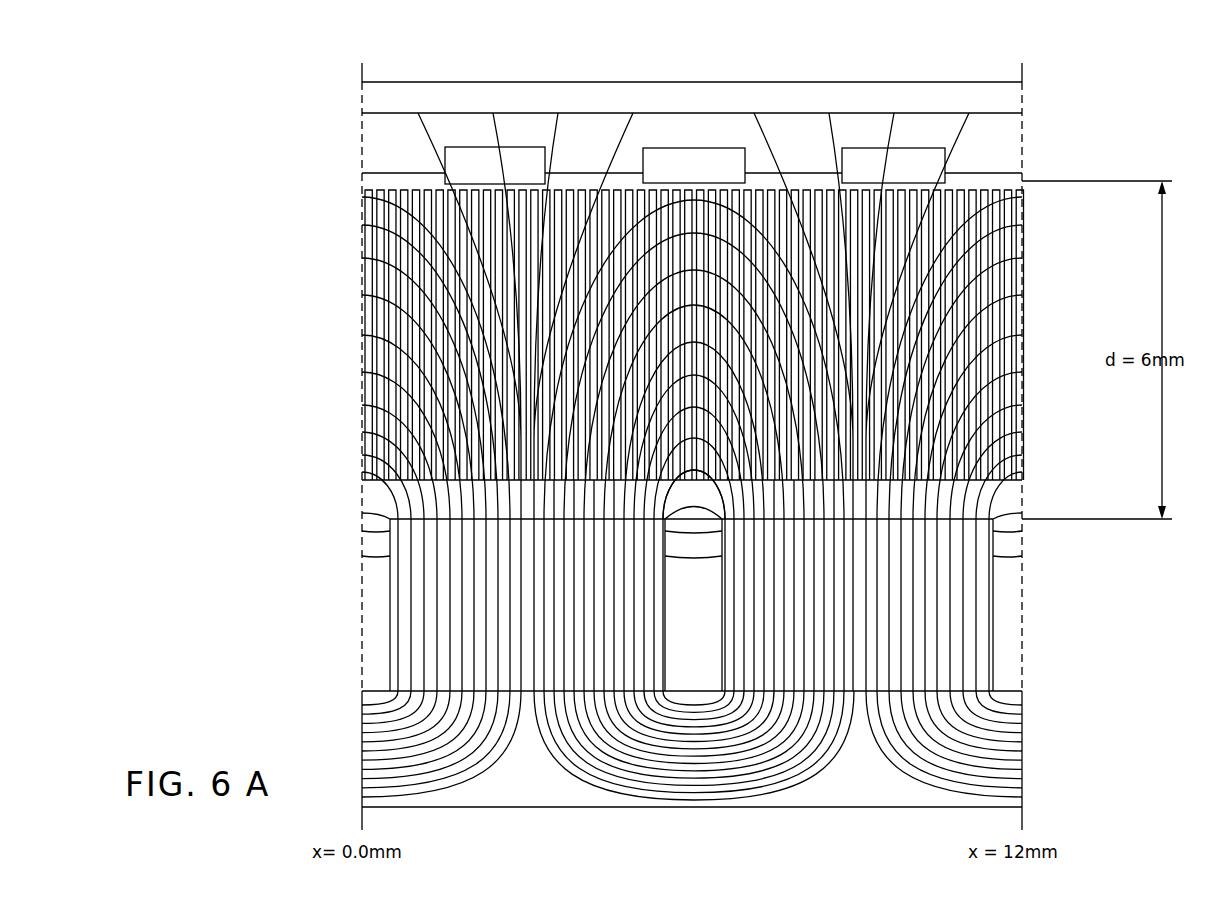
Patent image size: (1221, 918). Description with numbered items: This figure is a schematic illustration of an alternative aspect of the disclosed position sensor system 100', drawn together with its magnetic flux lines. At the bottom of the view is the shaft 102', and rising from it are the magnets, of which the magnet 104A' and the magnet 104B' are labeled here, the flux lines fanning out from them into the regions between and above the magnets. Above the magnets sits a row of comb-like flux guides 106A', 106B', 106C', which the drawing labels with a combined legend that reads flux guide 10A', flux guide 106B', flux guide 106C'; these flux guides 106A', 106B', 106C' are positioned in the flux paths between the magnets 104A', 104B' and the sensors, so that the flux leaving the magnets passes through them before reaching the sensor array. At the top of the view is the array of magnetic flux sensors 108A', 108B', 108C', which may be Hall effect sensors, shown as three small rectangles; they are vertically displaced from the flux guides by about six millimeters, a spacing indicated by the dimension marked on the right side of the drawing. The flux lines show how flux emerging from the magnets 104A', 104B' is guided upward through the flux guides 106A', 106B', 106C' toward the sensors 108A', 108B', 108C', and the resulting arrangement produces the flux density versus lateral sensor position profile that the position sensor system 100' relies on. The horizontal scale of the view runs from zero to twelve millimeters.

The position sensor system 100' is at (636, 446).
The magnetic flux sensor 108A' is at (487, 115).
The magnetic flux sensor 108B' is at (687, 114).
The magnetic flux sensor 108C' is at (887, 114).
The comb-shaped magnetic elements (as printed) 10A' is at (692, 335).
The flux guide 106A' is at (569, 335).
The flux guide 106B' is at (692, 335).
The flux guide 106C' is at (692, 335).
The magnet 104A' is at (322, 602).
The magnet 104B' is at (1063, 603).
The shaft 102' is at (752, 749).